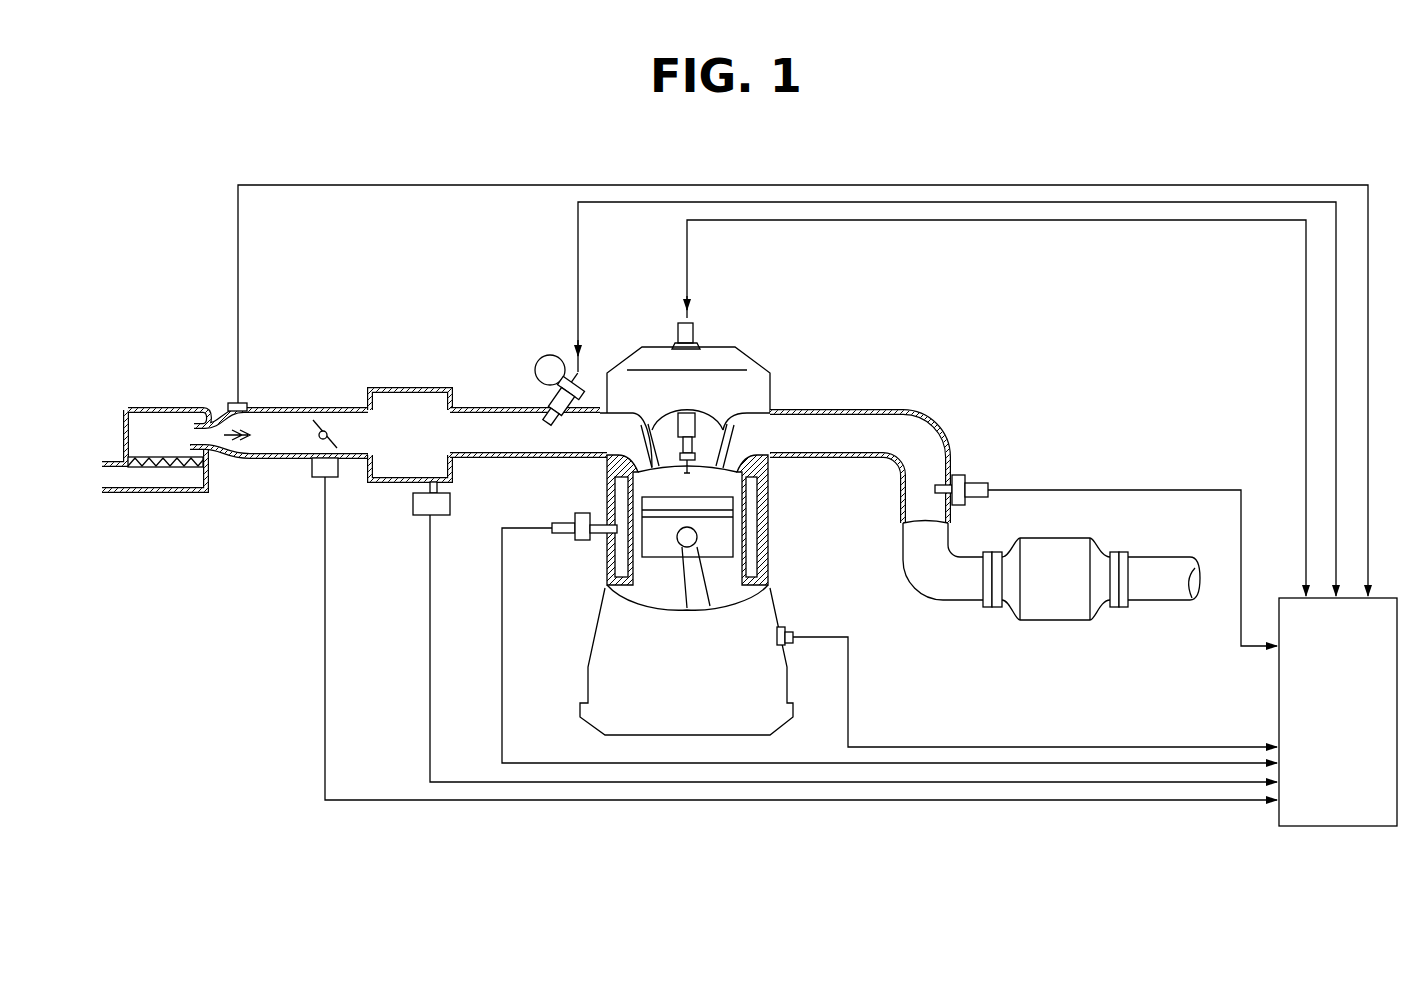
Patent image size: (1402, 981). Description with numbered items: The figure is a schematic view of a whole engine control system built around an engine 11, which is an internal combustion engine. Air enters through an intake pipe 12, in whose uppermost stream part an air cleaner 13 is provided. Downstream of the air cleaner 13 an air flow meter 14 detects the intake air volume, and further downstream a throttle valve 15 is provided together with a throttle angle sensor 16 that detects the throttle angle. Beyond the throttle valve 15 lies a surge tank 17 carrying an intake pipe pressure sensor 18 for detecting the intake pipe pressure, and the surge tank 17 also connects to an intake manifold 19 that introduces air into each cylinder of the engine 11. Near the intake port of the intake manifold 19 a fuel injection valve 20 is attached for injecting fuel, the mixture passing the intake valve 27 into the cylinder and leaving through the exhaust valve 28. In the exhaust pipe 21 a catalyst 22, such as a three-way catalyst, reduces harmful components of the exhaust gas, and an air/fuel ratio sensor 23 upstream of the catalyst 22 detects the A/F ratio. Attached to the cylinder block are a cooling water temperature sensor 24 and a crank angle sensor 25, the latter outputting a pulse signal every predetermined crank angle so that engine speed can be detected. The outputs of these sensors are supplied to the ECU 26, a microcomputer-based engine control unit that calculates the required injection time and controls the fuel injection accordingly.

The engine 11 is at (757, 362).
The intake pipe 12 is at (272, 407).
The air cleaner 13 is at (176, 466).
The air flow meter 14 is at (232, 403).
The throttle valve 15 is at (337, 447).
The throttle angle sensor 16 is at (316, 480).
The surge tank 17 is at (410, 387).
The intake pipe pressure sensor 18 is at (418, 518).
The intake manifold 19 is at (530, 459).
The fuel injection valve 20 is at (562, 406).
The exhaust pipe 21 is at (882, 409).
The catalyst 22 is at (1072, 538).
The air/fuel ratio sensor 23 is at (957, 477).
The cooling water temperature sensor 24 is at (580, 545).
The crank angle sensor 25 is at (785, 627).
The engine control unit (ECU) 26 is at (1279, 700).
The intake valve 27 is at (650, 467).
The exhaust valve 28 is at (727, 428).